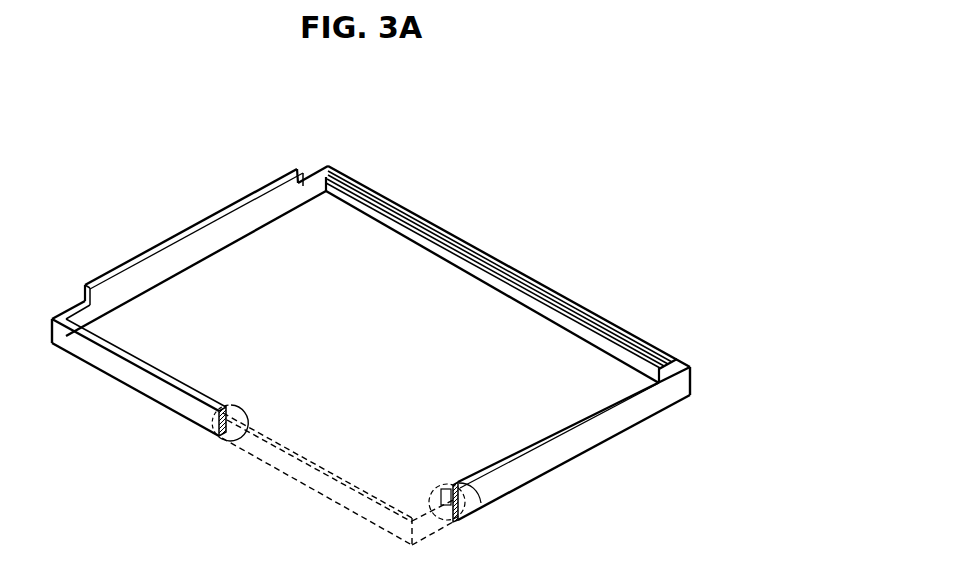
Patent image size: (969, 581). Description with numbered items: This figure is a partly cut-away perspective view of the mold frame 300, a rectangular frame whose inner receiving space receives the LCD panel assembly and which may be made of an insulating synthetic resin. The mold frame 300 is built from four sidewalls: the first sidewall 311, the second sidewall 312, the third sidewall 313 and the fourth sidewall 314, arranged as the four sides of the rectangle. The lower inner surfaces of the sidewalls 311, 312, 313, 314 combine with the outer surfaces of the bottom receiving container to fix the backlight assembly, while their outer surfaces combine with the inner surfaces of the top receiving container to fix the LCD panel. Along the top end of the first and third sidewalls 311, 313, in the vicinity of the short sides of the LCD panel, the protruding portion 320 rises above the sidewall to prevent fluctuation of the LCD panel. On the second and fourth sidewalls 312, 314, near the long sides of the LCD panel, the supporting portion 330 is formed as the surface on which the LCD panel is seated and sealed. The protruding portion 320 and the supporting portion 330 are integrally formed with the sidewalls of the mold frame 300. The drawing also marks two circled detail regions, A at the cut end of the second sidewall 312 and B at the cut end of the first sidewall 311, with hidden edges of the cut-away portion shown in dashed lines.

The mold frame 300 is at (645, 128).
The first sidewall 311 is at (537, 465).
The second sidewall 312 is at (128, 373).
The third sidewall 313 is at (133, 282).
The fourth sidewall 314 is at (583, 304).
The protruding portion 320 is at (203, 225).
The supporting portion 330 is at (468, 258).
The detail region A is at (236, 404).
The detail region B is at (480, 489).